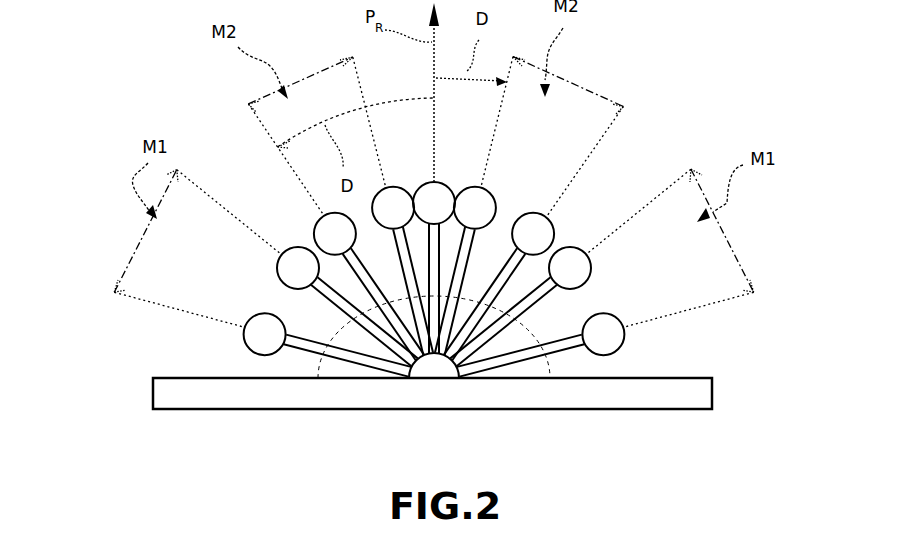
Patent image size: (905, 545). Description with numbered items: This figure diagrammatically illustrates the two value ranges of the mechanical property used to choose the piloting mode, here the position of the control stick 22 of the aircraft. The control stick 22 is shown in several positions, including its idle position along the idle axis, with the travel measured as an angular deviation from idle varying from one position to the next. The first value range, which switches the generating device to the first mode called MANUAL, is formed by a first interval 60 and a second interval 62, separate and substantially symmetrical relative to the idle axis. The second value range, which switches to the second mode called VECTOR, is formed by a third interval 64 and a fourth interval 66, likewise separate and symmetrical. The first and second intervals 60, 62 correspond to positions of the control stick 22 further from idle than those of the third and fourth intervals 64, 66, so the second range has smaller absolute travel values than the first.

The control stick 22 is at (561, 362).
The first interval 60 is at (728, 228).
The second interval 62 is at (130, 238).
The third interval 64 is at (612, 88).
The fourth interval 66 is at (300, 75).